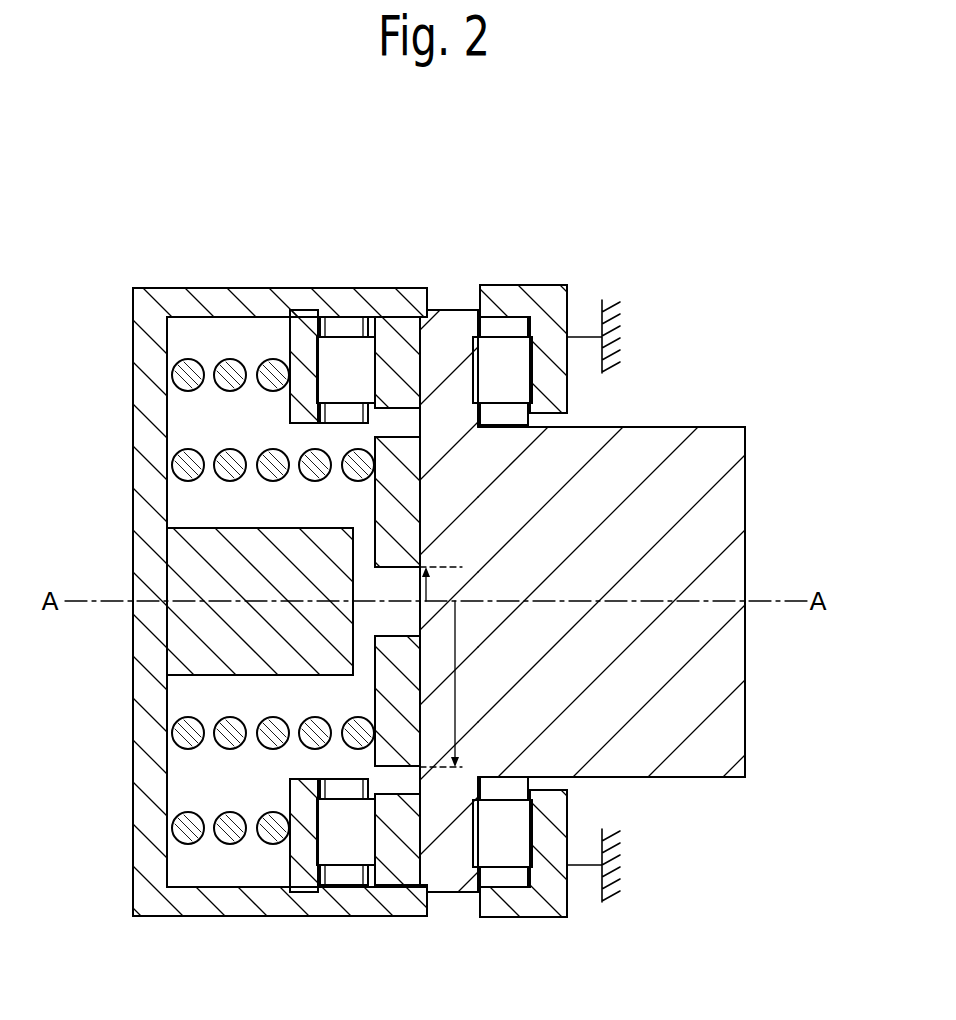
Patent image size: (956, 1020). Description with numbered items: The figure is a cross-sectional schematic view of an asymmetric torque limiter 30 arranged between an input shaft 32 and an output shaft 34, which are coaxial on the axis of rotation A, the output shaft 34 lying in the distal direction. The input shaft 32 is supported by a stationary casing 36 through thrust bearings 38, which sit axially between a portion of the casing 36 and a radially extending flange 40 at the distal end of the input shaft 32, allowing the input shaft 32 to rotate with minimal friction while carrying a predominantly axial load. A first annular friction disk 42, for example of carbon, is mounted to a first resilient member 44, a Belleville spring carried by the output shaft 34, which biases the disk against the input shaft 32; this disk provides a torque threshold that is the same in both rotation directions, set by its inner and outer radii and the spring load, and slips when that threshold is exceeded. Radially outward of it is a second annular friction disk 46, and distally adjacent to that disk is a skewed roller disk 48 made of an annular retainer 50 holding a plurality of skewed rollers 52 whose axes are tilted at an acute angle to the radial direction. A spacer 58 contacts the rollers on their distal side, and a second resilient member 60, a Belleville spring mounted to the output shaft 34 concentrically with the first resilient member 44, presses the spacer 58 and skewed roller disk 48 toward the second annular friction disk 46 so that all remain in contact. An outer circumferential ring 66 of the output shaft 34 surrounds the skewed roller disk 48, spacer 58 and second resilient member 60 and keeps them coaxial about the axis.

The asymmetric torque limiter 30 is at (466, 182).
The input shaft 32 is at (680, 555).
The output shaft 34 is at (190, 562).
The stationary casing 36 is at (557, 307).
The thrust bearings 38 is at (510, 353).
The radially extending flange 40 is at (450, 337).
The first annular friction disk 42 is at (410, 493).
The first resilient member 44 is at (226, 458).
The second annular friction disk 46 is at (392, 337).
The skewed roller disk 48 is at (343, 302).
The annular retainer 50 is at (340, 880).
The skewed rollers 52 is at (323, 340).
The spacer 58 is at (300, 318).
The second resilient member 60 is at (226, 366).
The outer circumferential ring 66 is at (175, 300).